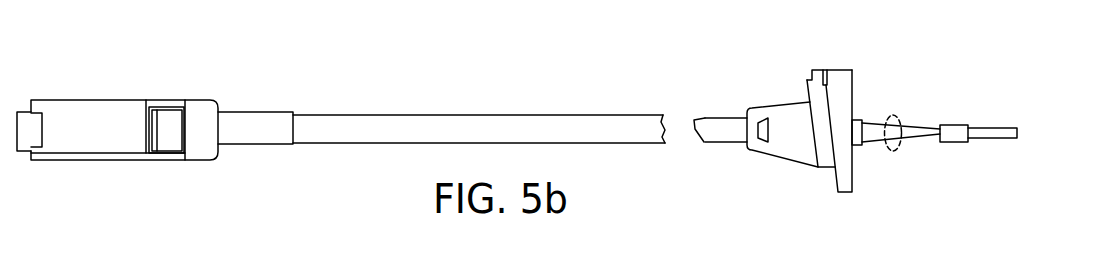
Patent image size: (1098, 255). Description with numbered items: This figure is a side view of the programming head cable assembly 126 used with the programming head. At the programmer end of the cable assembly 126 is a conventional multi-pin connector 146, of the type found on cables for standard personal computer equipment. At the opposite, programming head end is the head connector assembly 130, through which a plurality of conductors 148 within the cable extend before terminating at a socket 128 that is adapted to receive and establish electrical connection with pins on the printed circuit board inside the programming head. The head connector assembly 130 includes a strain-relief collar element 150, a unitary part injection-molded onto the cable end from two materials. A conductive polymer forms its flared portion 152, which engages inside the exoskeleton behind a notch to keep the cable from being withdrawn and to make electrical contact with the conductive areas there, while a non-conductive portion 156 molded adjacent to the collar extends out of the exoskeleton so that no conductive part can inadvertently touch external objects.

The programming head cable assembly 126 is at (535, 37).
The multi-pin connector 146 is at (82, 113).
The head connector assembly 130 is at (891, 44).
The strain-relief collar element 150 is at (788, 104).
The non-conductive portion 156 is at (785, 143).
The flared portion 152 is at (847, 172).
The conductors 148 is at (900, 115).
The socket 128 is at (988, 132).